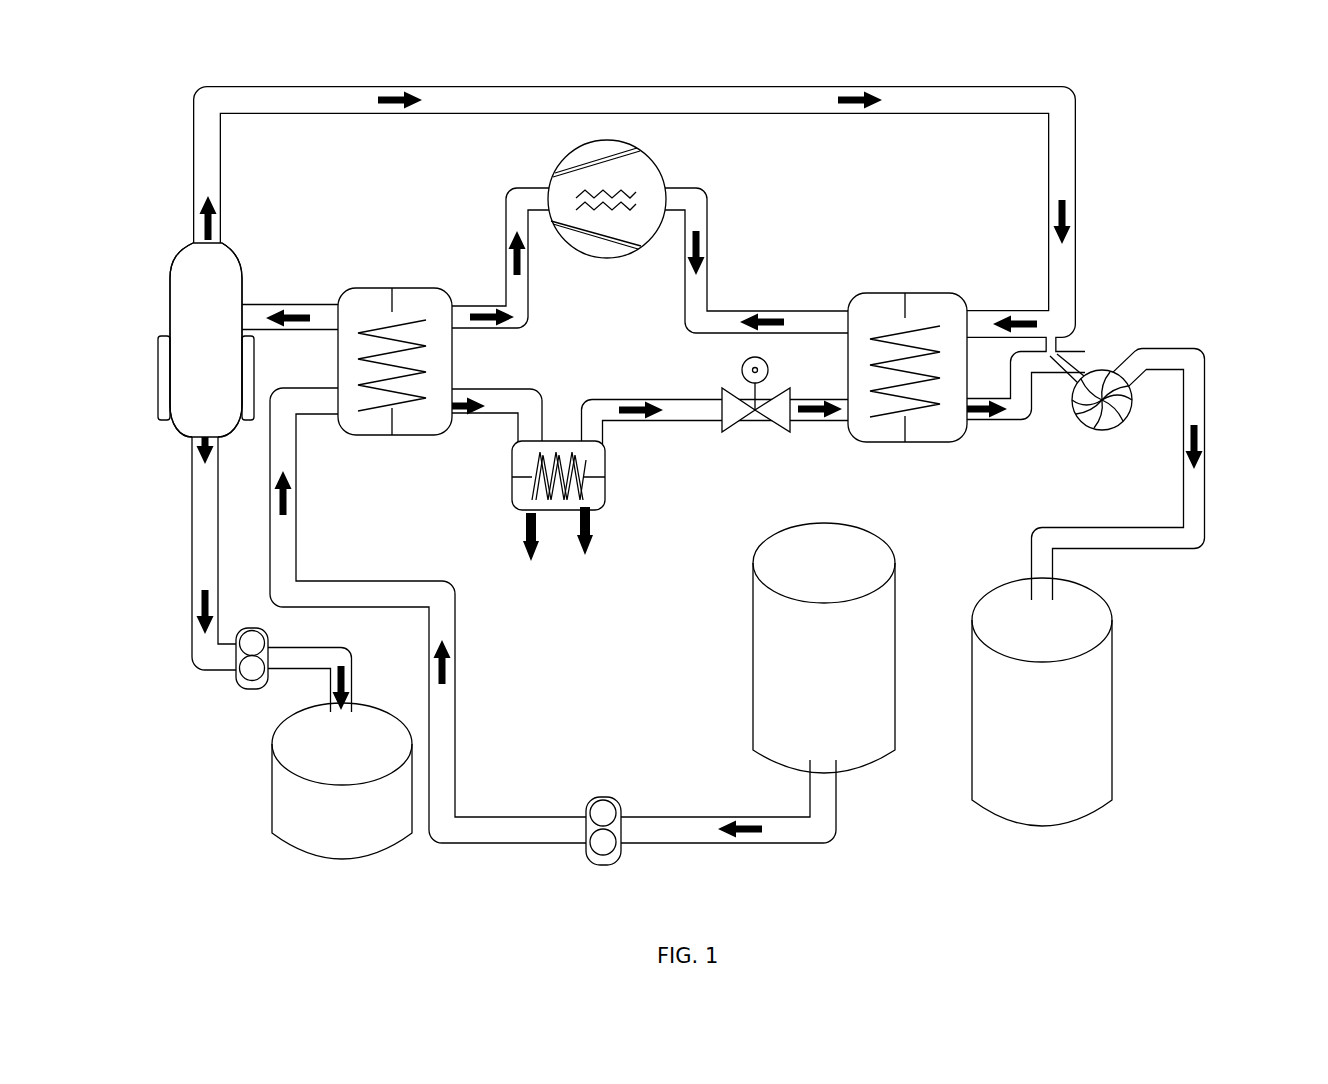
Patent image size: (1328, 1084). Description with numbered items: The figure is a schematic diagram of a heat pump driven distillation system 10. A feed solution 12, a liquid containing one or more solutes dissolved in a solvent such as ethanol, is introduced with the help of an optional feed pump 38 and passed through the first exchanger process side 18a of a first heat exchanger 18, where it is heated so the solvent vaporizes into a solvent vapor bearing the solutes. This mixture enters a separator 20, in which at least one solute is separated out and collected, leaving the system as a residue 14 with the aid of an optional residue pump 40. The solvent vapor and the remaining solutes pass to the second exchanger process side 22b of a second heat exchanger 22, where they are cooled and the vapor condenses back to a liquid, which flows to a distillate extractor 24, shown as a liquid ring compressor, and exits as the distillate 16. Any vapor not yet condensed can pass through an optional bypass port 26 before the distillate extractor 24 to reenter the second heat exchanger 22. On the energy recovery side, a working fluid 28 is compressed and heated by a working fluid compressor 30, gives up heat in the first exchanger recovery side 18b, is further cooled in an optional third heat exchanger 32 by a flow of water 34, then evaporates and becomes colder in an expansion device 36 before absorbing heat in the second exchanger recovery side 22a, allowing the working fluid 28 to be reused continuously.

The distillation system 10 is at (1222, 80).
The feed solution 12 is at (837, 689).
The residue 14 is at (356, 761).
The distillate 16 is at (1058, 732).
The first heat exchanger 18 is at (373, 288).
The first exchanger process side 18a is at (362, 432).
The first exchanger recovery side 18b is at (430, 432).
The separator 20 is at (170, 312).
The second heat exchanger 22 is at (888, 292).
The second exchanger recovery side 22a is at (866, 436).
The second exchanger process side 22b is at (940, 436).
The distillate extractor 24 is at (1090, 428).
The bypass port 26 is at (1058, 348).
The working fluid 28 is at (693, 265).
The working fluid compressor 30 is at (655, 172).
The third heat exchanger 32 is at (605, 488).
The flow of water 34 is at (585, 535).
The expansion device 36 is at (767, 415).
The feed pump 38 is at (600, 797).
The residue pump 40 is at (235, 678).